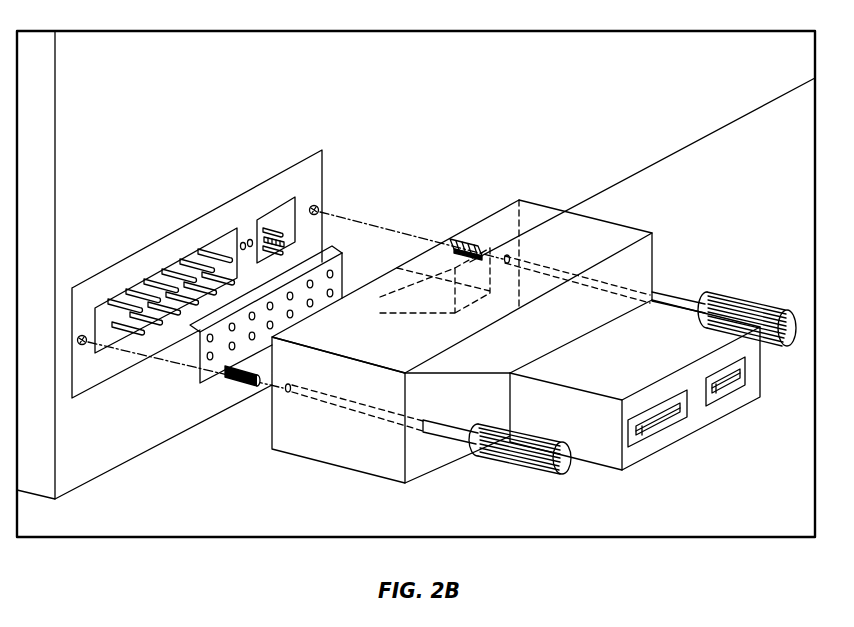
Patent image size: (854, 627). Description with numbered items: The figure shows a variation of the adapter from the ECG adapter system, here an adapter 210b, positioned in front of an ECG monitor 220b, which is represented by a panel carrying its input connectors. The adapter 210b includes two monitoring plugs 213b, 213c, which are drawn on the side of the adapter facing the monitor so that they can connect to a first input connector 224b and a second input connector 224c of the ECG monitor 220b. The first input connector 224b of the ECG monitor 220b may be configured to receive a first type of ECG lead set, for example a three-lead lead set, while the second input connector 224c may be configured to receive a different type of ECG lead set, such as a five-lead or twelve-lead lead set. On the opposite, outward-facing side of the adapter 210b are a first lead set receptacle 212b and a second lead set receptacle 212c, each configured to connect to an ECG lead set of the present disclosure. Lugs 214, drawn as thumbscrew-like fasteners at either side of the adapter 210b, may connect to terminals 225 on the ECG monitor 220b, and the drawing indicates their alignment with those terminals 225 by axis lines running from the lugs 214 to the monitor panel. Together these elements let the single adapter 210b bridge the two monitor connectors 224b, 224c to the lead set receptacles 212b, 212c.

The adapter 210b is at (622, 224).
The first lead set receptacle 212b is at (727, 388).
The second lead set receptacle 212c is at (668, 423).
The monitoring plug 213b is at (400, 228).
The monitoring plug 213c is at (228, 360).
The lugs 214 is at (744, 300).
The ECG monitor 220b is at (131, 438).
The first input connector 224b is at (280, 207).
The second input connector 224c is at (170, 270).
The terminals 225 is at (321, 208).